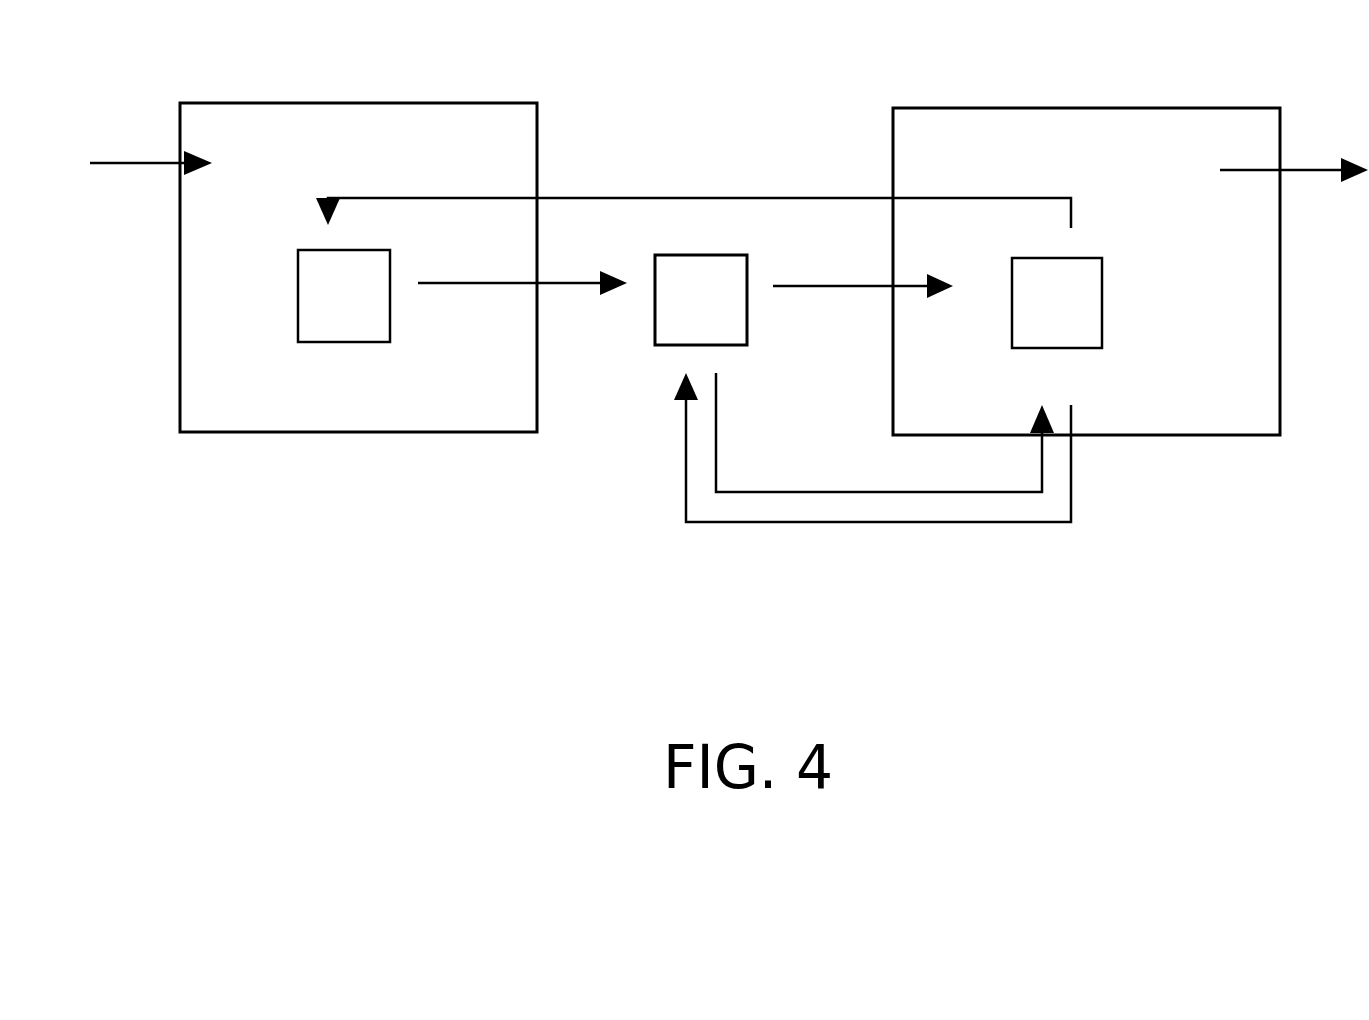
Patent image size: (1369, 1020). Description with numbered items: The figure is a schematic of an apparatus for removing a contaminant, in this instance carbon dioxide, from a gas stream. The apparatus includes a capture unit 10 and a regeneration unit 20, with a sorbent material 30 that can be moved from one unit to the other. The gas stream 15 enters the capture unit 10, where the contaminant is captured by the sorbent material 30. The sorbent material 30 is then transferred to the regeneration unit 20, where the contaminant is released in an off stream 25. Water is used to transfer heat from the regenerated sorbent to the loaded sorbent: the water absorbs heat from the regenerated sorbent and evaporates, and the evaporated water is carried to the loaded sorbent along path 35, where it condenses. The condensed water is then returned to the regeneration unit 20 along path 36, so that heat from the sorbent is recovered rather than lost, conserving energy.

The capture unit 10 is at (285, 395).
The gas stream 15 is at (150, 147).
The regeneration unit 20 is at (1193, 342).
The off stream 25 is at (1294, 156).
The sorbent material 30 is at (720, 310).
The path 35 is at (693, 389).
The path 36 is at (885, 432).